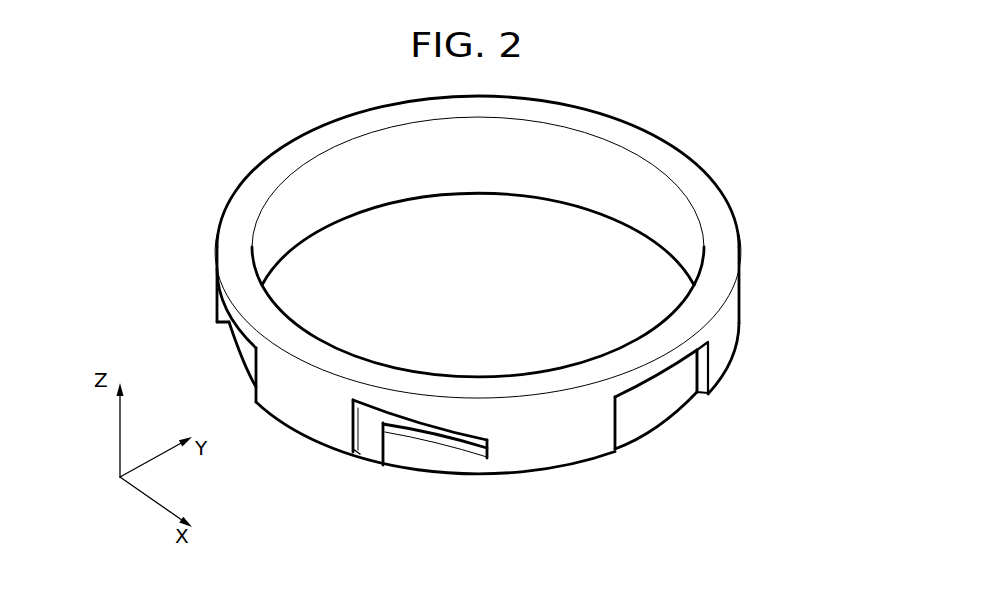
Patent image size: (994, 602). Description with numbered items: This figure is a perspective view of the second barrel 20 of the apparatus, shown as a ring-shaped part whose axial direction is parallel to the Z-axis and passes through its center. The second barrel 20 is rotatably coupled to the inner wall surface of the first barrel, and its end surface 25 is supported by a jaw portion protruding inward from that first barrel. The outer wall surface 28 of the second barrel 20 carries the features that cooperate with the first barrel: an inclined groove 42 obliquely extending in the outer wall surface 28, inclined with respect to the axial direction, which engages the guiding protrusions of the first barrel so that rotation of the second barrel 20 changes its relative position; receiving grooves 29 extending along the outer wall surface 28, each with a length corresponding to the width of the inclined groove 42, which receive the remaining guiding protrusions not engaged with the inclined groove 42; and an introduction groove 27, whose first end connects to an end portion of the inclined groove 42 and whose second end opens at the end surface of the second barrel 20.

The second barrel 20 is at (209, 137).
The end surface 25 is at (300, 435).
The introduction groove 27 is at (358, 453).
The outer wall surface 28 is at (733, 322).
The receiving grooves 29 is at (662, 398).
The inclined groove 42 is at (433, 433).